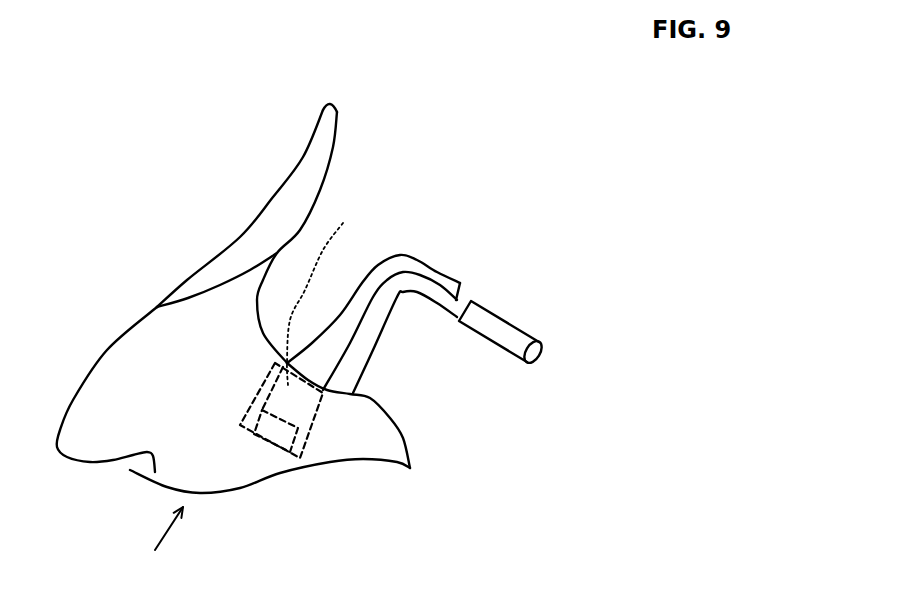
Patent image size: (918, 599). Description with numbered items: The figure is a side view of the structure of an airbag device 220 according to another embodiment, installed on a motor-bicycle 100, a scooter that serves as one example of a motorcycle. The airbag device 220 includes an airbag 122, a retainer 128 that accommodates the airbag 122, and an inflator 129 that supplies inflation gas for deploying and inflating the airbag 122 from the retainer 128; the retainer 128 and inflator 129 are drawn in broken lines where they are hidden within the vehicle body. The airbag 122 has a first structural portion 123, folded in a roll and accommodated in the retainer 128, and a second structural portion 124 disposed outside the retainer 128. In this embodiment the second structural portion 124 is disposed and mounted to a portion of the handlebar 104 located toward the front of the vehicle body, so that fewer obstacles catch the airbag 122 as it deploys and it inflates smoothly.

The motor-bicycle 100 is at (295, 312).
The handlebar 104 is at (460, 300).
The airbag 122 is at (377, 238).
The first structural portion 123 is at (467, 168).
The second structural portion 124 is at (443, 275).
The retainer 128 is at (323, 440).
The inflator 129 is at (263, 443).
The airbag device 220 is at (447, 405).